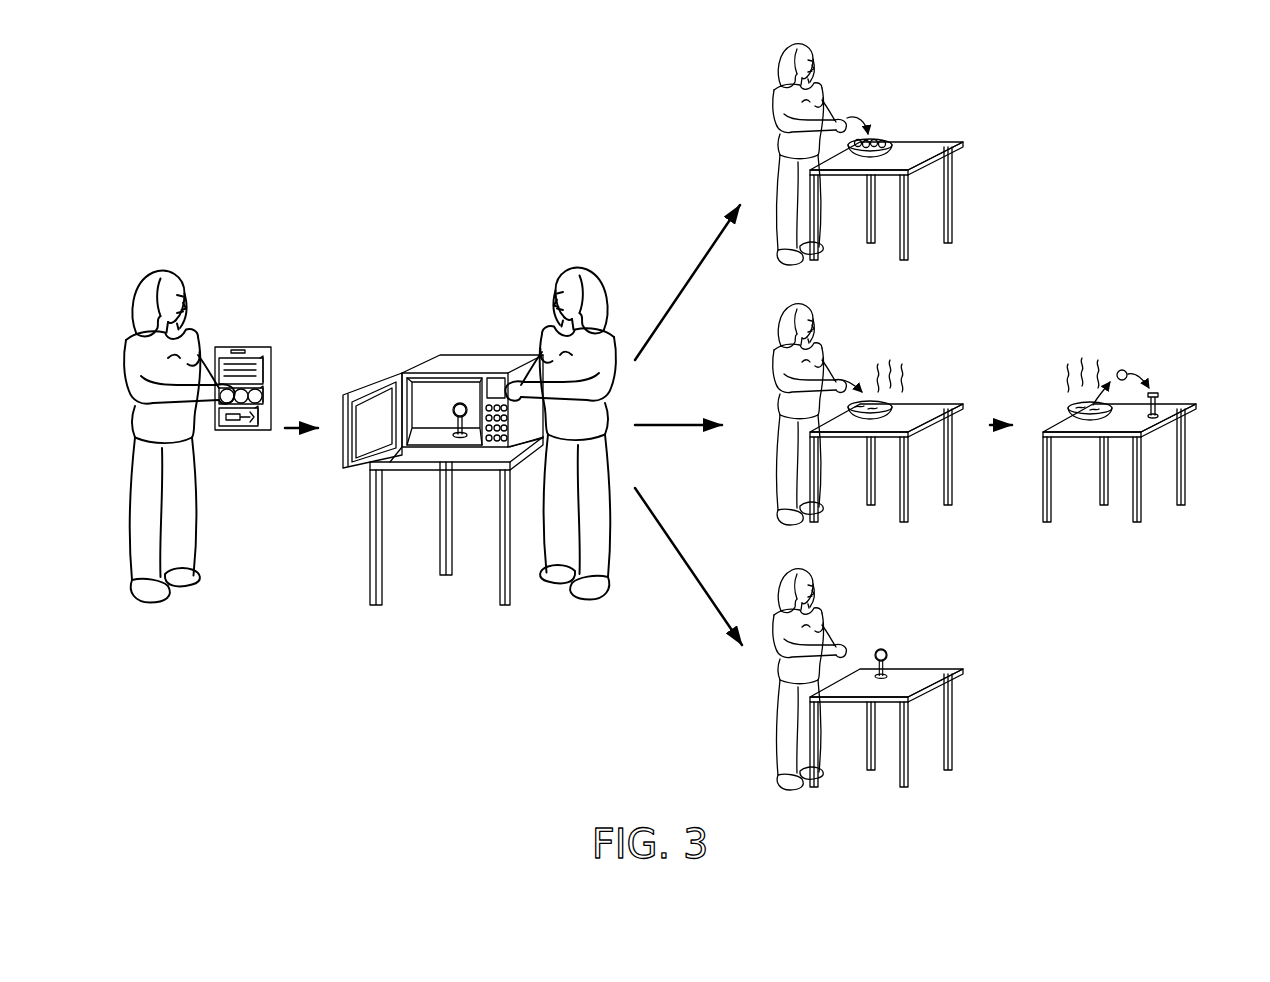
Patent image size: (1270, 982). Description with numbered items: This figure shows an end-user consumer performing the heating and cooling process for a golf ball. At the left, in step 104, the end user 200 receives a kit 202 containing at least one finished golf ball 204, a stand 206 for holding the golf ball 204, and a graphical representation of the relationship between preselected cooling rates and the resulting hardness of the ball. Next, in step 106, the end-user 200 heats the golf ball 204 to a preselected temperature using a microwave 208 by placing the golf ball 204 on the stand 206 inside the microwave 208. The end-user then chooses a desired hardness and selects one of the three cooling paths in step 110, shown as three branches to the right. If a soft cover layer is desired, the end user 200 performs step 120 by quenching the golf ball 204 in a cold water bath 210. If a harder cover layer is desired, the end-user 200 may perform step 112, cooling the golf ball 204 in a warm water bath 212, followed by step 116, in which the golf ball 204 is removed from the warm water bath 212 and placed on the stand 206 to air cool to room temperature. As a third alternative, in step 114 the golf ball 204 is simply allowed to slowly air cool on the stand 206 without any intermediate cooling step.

The end user 200 is at (180, 256).
The kit 202 is at (265, 340).
The golf ball 204 is at (268, 396).
The stand 206 is at (240, 428).
The microwave 208 is at (488, 364).
The cold water bath 210 is at (900, 146).
The warm water bath 212 is at (900, 410).
The step 104 is at (113, 625).
The step 106 is at (345, 625).
The step 110 is at (1220, 790).
The step 112 is at (963, 523).
The step 114 is at (986, 570).
The step 116 is at (1197, 523).
The step 120 is at (963, 260).